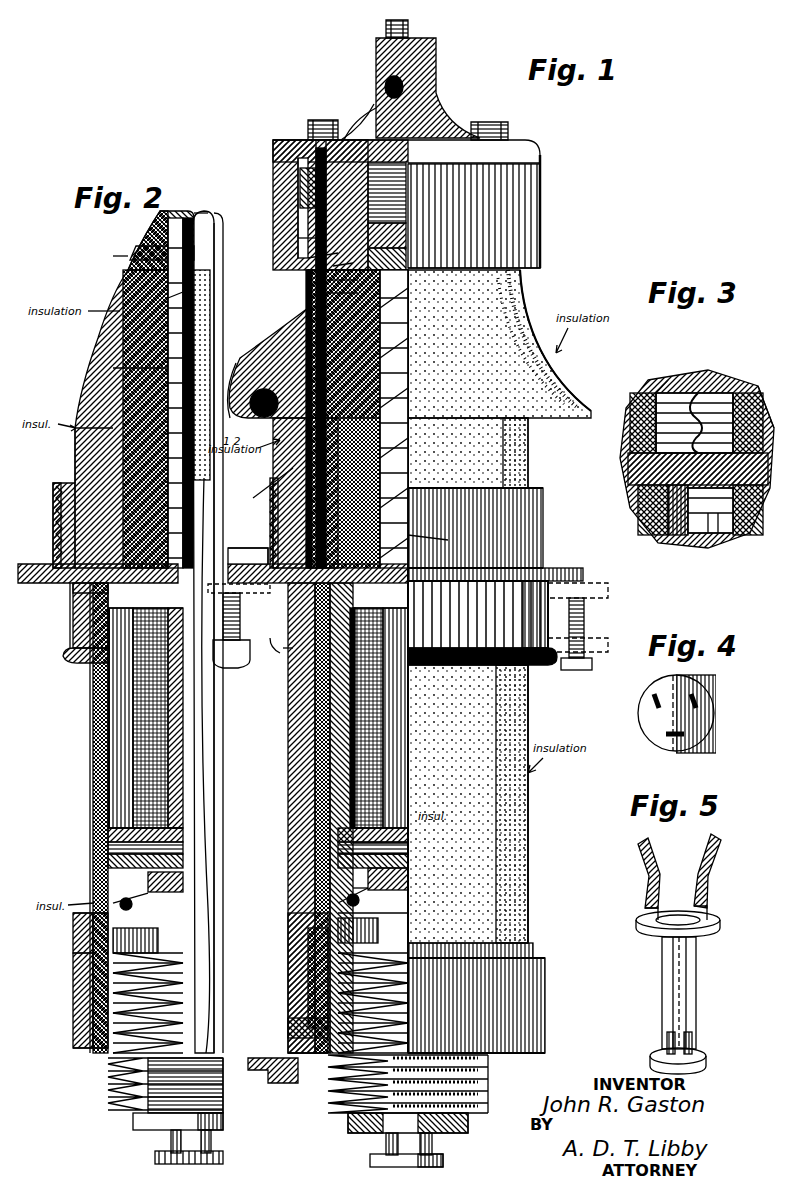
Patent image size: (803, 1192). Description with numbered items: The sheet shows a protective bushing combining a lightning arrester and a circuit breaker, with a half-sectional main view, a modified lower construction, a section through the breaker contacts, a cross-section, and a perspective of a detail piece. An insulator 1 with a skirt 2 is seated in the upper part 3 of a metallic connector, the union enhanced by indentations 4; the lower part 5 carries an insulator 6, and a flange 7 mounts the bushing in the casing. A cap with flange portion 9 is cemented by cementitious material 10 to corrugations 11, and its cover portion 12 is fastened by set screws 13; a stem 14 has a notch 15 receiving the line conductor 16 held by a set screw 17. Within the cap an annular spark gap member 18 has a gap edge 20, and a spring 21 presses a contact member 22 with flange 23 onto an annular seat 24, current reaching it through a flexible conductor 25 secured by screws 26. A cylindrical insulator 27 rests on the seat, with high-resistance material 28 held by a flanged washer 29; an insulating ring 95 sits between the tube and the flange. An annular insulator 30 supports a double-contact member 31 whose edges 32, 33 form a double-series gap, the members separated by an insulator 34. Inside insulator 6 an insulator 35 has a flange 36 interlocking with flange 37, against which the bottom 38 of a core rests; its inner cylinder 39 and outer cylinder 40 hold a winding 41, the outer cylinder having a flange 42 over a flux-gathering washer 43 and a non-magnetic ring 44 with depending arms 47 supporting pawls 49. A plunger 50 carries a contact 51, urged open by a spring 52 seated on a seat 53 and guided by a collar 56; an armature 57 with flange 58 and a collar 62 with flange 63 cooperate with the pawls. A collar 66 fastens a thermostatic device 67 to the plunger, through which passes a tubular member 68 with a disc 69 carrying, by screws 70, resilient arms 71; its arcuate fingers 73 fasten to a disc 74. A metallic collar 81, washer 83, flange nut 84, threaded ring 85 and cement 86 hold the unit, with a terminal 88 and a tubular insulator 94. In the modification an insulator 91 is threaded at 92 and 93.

In FIG. 1, the insulator 1 is at (520, 455).
In FIG. 2, the insulator 1 is at (72, 440).
In FIG. 1, the skirt 2 is at (570, 398).
In FIG. 2, the skirt 2 is at (196, 390).
In FIG. 1, the upper part of metallic connector 3 is at (262, 490).
In FIG. 2, the upper part of metallic connector 3 is at (46, 512).
In FIG. 1, the cooperative indentations 4 is at (268, 475).
In FIG. 2, the cooperative indentations 4 is at (46, 488).
In FIG. 1, the lower part of metallic connector 5 is at (524, 657).
In FIG. 2, the lower part of metallic connector 5 is at (68, 600).
In FIG. 1, the insulator 6 is at (290, 688).
In FIG. 1, the flange 7 is at (577, 565).
In FIG. 2, the flange 7 is at (30, 575).
In FIG. 1, the flange portion of cap 9 is at (532, 178).
In FIG. 2, the flange portion of cap 9 is at (196, 255).
In FIG. 1, the cementitious material 10 is at (292, 181).
In FIG. 1, the indentations or corrugations 11 is at (300, 235).
In FIG. 1, the cover portion of cap 12 is at (530, 146).
In FIG. 3, the cover portion of cap 12 is at (728, 380).
In FIG. 1, the set screws 13 is at (298, 116).
In FIG. 1, the projection or stem 14 is at (432, 98).
In FIG. 1, the notch 15 is at (362, 98).
In FIG. 1, the line conductor 16 is at (377, 72).
In FIG. 1, the set screw 17 is at (405, 19).
In FIG. 1, the annular metallic spark gap member 18 is at (268, 135).
In FIG. 3, the annular metallic spark gap member 18 is at (748, 400).
In FIG. 1, the annular spark gap edge 20 is at (294, 198).
In FIG. 1, the spring 21 is at (400, 160).
In FIG. 3, the spring 21 is at (622, 418).
In FIG. 1, the circuit contact member 22 is at (399, 240).
In FIG. 2, the circuit contact member 22 is at (186, 212).
In FIG. 3, the circuit contact member 22 is at (622, 500).
In FIG. 3, the annular flange 23 is at (748, 440).
In FIG. 3, the annular seat 24 is at (742, 515).
In FIG. 1, the flexible conductor 25 is at (350, 125).
In FIG. 3, the flexible conductor 25 is at (652, 383).
In FIG. 3, the screws 26 is at (682, 385).
In FIG. 1, the cylindrical insulator 27 is at (400, 300).
In FIG. 1, the high-resistance material 28 is at (372, 213).
In FIG. 2, the high-resistance material 28 is at (168, 204).
In FIG. 3, the high-resistance material 28 is at (660, 520).
In FIG. 1, the flanged metallic washer 29 is at (320, 290).
In FIG. 2, the flanged metallic washer 29 is at (162, 288).
In FIG. 1, the annular insulator 30 is at (322, 275).
In FIG. 2, the annular insulator 30 is at (176, 282).
In FIG. 1, the annular double-contact spark gap member 31 is at (322, 265).
In FIG. 2, the annular double-contact spark gap member 31 is at (112, 250).
In FIG. 1, the gap edge 32 is at (330, 248).
In FIG. 1, the gap edge 33 is at (335, 258).
In FIG. 1, the insulator 34 is at (399, 190).
In FIG. 2, the insulator 34 is at (190, 212).
In FIG. 1, the insulator 35 is at (330, 716).
In FIG. 1, the annular flange 36 is at (262, 648).
In FIG. 1, the annular flange 37 is at (278, 645).
In FIG. 1, the bottom part of core member 38 is at (522, 600).
In FIG. 2, the bottom part of core member 38 is at (70, 652).
In FIG. 1, the inner cylinder of core 39 is at (380, 690).
In FIG. 2, the inner cylinder of core 39 is at (120, 700).
In FIG. 1, the outer cylinder of core 40 is at (370, 712).
In FIG. 2, the outer cylinder of core 40 is at (130, 725).
In FIG. 1, the electro-magnetic winding 41 is at (376, 740).
In FIG. 2, the electro-magnetic winding 41 is at (140, 740).
In FIG. 1, the flange 42 is at (330, 827).
In FIG. 2, the flange 42 is at (102, 825).
In FIG. 1, the flux-gathering washer 43 is at (330, 840).
In FIG. 2, the flux-gathering washer 43 is at (102, 838).
In FIG. 1, the annular ring 44 is at (330, 855).
In FIG. 2, the annular ring 44 is at (102, 852).
In FIG. 1, the arms 47 is at (400, 865).
In FIG. 2, the arms 47 is at (102, 878).
In FIG. 1, the pawl 49 is at (320, 893).
In FIG. 2, the pawl 49 is at (112, 890).
In FIG. 1, the plunger 50 is at (372, 362).
In FIG. 2, the plunger 50 is at (104, 359).
In FIG. 3, the plunger 50 is at (688, 528).
In FIG. 1, the contact member 51 is at (400, 280).
In FIG. 2, the contact member 51 is at (160, 265).
In FIG. 3, the contact member 51 is at (635, 510).
In FIG. 1, the spring 52 is at (372, 392).
In FIG. 2, the spring 52 is at (110, 340).
In FIG. 1, the seat 53 is at (536, 540).
In FIG. 1, the guide collar 56 is at (395, 560).
In FIG. 1, the armature 57 is at (400, 835).
In FIG. 1, the annular flange 58 is at (400, 848).
In FIG. 1, the collar 62 is at (338, 892).
In FIG. 1, the flange 63 is at (340, 880).
In FIG. 1, the collar 66 is at (462, 1115).
In FIG. 2, the collar 66 is at (126, 1115).
In FIG. 1, the thermostatic device 67 is at (480, 1062).
In FIG. 2, the thermostatic device 67 is at (108, 1068).
In FIG. 5, the tubular member 68 is at (690, 968).
In FIG. 1, the annular disc 69 is at (358, 941).
In FIG. 2, the annular disc 69 is at (139, 945).
In FIG. 5, the annular disc 69 is at (630, 917).
In FIG. 5, the screws 70 is at (638, 898).
In FIG. 5, the arms 71 is at (636, 862).
In FIG. 1, the arcuate fingers 73 is at (376, 1138).
In FIG. 2, the arcuate fingers 73 is at (163, 1130).
In FIG. 4, the arcuate fingers 73 is at (646, 686).
In FIG. 5, the arcuate fingers 73 is at (658, 1034).
In FIG. 1, the disc 74 is at (380, 1159).
In FIG. 2, the disc 74 is at (215, 1148).
In FIG. 4, the disc 74 is at (704, 712).
In FIG. 5, the disc 74 is at (694, 1046).
In FIG. 1, the metallic collar 81 is at (330, 905).
In FIG. 1, the washer 83 is at (282, 1030).
In FIG. 1, the flange nut 84 is at (280, 920).
In FIG. 2, the flange nut 84 is at (66, 990).
In FIG. 1, the threaded ring 85 is at (280, 937).
In FIG. 1, the cementitious material 86 is at (300, 968).
In FIG. 1, the terminal 88 is at (252, 1070).
In FIG. 2, the insulator 91 is at (86, 775).
In FIG. 2, the threads 92 is at (68, 622).
In FIG. 1, the threads 93 is at (282, 1012).
In FIG. 2, the threads 93 is at (66, 947).
In FIG. 2, the tubular insulator 94 is at (86, 922).
In FIG. 1, the annular ring 95 is at (400, 527).